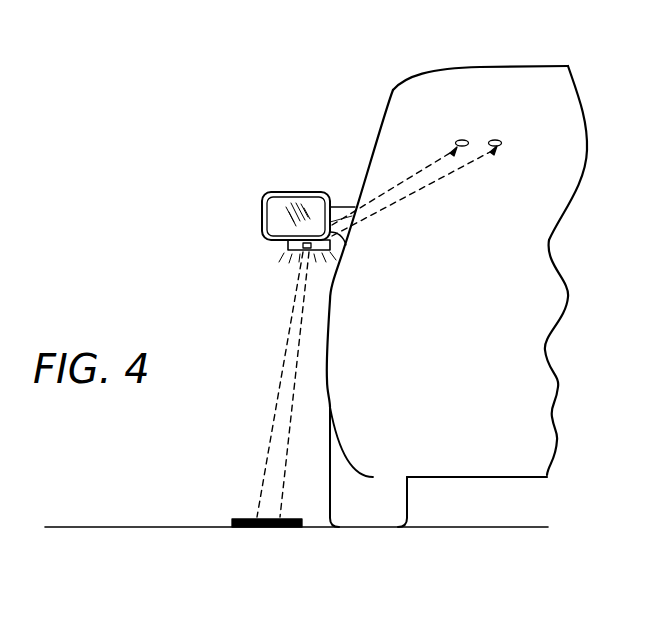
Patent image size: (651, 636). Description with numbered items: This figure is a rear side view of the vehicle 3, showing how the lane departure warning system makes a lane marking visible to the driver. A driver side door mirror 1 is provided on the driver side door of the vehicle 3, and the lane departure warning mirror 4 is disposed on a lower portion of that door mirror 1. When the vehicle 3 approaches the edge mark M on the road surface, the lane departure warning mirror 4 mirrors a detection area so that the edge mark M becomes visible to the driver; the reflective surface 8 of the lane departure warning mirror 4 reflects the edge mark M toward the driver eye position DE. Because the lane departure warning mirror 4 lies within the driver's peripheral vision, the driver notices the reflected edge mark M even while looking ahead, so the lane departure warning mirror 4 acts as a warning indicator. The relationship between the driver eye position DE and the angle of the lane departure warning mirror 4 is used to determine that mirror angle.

The driver side door mirror 1 is at (263, 205).
The lane departure warning mirror 4 is at (288, 243).
The reflective surface 8 is at (292, 250).
The vehicle 3 is at (521, 44).
The driver eye position DE is at (461, 138).
The edge mark M is at (270, 527).